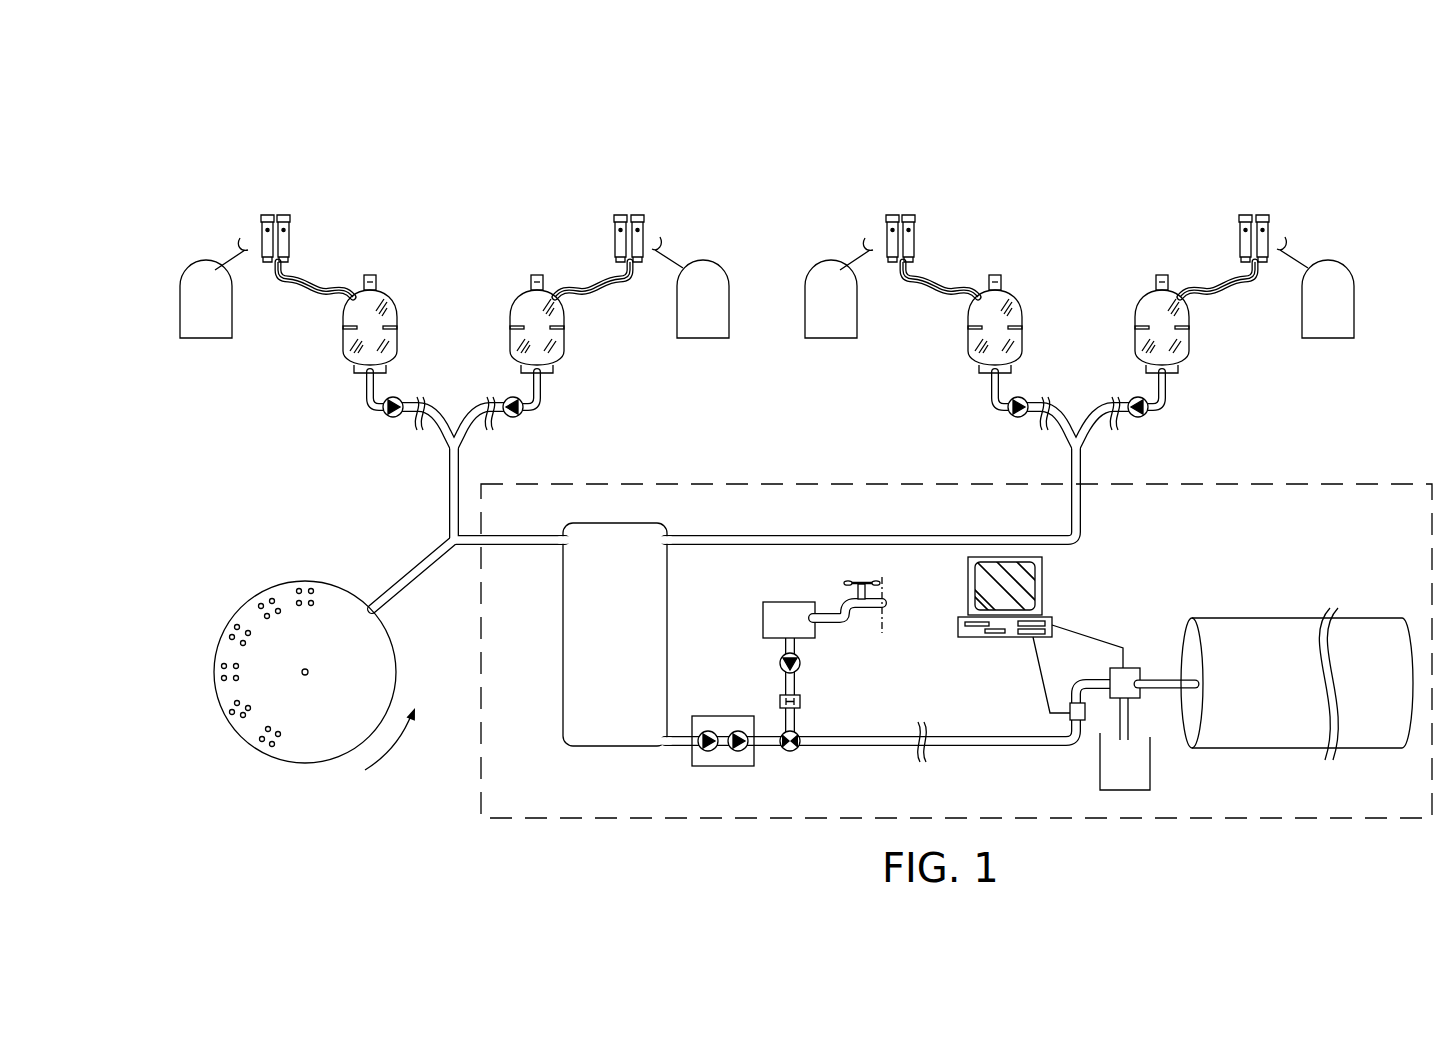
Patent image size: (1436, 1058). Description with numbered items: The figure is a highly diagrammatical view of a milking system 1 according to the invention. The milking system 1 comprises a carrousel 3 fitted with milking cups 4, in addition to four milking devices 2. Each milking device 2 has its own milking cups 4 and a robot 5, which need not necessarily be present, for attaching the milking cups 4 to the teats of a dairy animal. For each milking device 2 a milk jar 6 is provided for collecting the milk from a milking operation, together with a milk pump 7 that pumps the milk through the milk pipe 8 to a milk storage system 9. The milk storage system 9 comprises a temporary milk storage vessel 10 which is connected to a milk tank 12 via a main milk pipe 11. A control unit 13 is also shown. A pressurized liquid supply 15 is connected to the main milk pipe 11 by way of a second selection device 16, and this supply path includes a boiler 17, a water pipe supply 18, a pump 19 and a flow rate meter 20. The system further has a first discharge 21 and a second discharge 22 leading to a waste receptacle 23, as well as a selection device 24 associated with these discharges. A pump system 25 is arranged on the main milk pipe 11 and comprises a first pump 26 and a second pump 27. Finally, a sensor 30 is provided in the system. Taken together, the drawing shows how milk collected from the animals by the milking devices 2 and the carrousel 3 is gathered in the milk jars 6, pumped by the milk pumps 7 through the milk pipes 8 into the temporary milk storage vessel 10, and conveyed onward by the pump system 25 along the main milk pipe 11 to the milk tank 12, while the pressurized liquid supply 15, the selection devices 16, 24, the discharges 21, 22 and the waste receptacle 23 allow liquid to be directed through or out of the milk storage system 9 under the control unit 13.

The milking system 1 is at (455, 800).
The milking device 2 is at (390, 181).
The carrousel 3 is at (242, 750).
The milking cups 4 is at (267, 232).
The robot 5 is at (207, 281).
The milk jar 6 is at (384, 291).
The milk pump 7 is at (506, 396).
The milk pipe 8 is at (453, 480).
The milk storage system 9 is at (572, 818).
The temporary milk storage vessel 10 is at (563, 638).
The main milk pipe 11 is at (985, 742).
The milk tank 12 is at (1245, 620).
The control unit 13 is at (1040, 587).
The pressurized liquid supply 15 is at (830, 650).
The second selection device 16 is at (790, 753).
The boiler 17 is at (780, 630).
The water pipe supply 18 is at (852, 603).
The pump 19 is at (783, 665).
The flow rate meter 20 is at (782, 703).
The first discharge 21 is at (1152, 683).
The second discharge 22 is at (1125, 723).
The waste receptacle 23 is at (1127, 770).
The selection device 24 is at (1130, 668).
The pump system 25 is at (692, 765).
The first pump 26 is at (712, 752).
The second pump 27 is at (745, 752).
The sensor 30 is at (1080, 713).